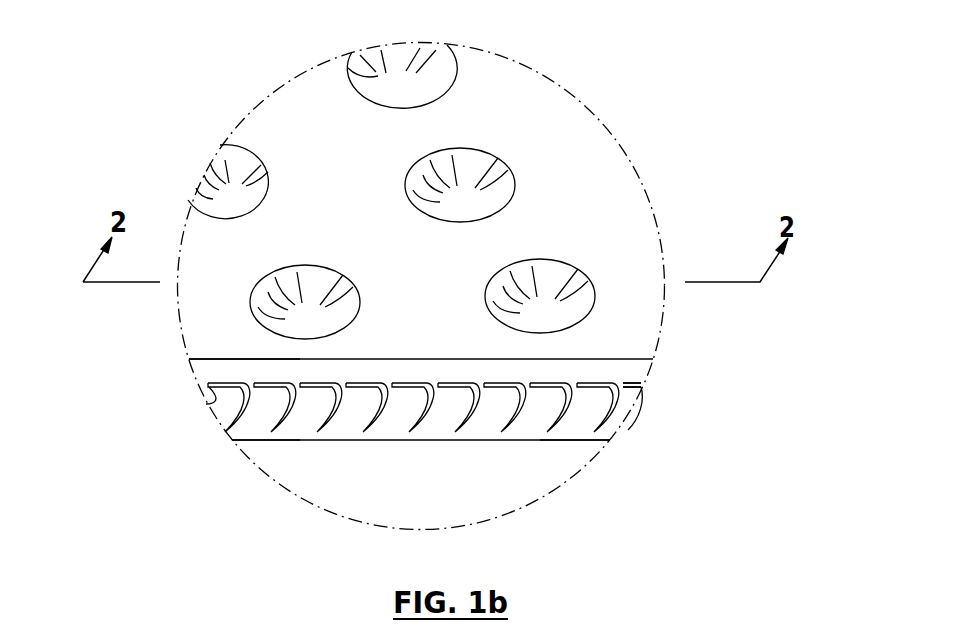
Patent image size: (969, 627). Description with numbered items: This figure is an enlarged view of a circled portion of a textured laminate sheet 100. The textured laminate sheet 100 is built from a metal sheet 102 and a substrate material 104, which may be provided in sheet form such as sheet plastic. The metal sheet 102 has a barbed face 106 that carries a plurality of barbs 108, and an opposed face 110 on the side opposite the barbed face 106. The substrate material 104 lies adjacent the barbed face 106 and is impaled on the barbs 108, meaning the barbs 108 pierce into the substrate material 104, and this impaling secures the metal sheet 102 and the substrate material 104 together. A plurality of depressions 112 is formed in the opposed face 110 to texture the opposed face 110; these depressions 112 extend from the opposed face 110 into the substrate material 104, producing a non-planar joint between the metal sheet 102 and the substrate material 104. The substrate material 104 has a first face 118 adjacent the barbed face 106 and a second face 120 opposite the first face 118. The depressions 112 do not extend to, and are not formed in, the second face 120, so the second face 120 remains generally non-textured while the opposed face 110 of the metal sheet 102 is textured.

The textured laminate sheet 100 is at (683, 260).
The metal sheet 102 is at (632, 342).
The substrate material 104 is at (610, 428).
The barbed face 106 is at (206, 404).
The barbs 108 is at (290, 442).
The opposed face 110 is at (213, 359).
The depressions 112 is at (292, 282).
The first face 118 is at (635, 383).
The second face 120 is at (582, 441).